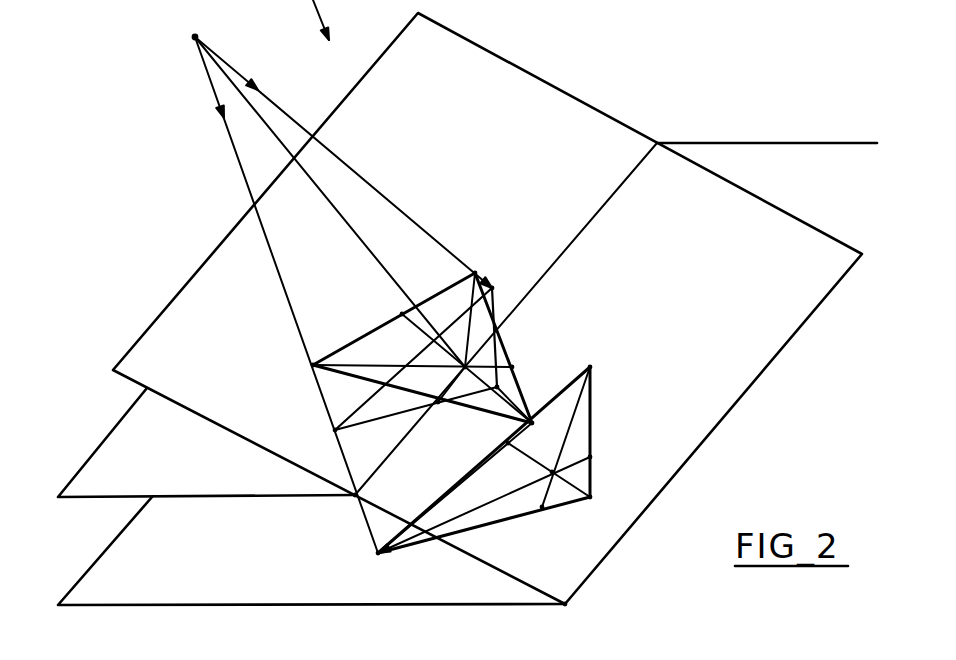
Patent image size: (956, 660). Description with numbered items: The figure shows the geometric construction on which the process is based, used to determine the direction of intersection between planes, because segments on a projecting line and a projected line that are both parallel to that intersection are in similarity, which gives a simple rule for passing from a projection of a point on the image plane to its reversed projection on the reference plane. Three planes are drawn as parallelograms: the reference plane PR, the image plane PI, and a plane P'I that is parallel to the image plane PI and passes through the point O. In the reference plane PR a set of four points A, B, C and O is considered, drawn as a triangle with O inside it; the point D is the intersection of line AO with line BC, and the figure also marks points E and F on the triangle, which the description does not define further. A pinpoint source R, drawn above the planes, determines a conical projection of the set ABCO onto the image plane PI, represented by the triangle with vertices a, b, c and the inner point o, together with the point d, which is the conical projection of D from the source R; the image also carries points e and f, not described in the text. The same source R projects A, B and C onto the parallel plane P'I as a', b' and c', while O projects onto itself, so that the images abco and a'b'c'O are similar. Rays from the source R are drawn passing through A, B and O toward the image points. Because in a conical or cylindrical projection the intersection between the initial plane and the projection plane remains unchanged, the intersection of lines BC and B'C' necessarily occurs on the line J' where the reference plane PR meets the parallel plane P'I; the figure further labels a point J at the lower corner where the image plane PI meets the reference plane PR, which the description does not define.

The reference plane PR is at (113, 368).
The plane parallel to the image plane P'I is at (196, 442).
The image plane PI is at (58, 603).
The pinpoint source R is at (338, 280).
The point A is at (298, 366).
The point B is at (476, 259).
The point C is at (543, 426).
The intersection of line AO with line BC D is at (522, 358).
The point E on side CA E is at (449, 417).
The point F on side AB F is at (390, 304).
The point O is at (461, 370).
The conical projection of A on plane P'I a' is at (321, 432).
The conical projection of B on plane P'I b' is at (505, 278).
The conical projection of C on plane P'I c' is at (507, 389).
The conical projection of A on the image plane a is at (378, 567).
The conical projection of B on the image plane b is at (599, 361).
The conical projection of C on the image plane c is at (599, 499).
The conical projection of D on the image plane d is at (601, 448).
The point e on side ac e is at (544, 518).
The point f on side ab f is at (503, 458).
The conical projection of O on the image plane o is at (558, 486).
The intersection of the reference plane and plane P'I J' is at (341, 511).
The point J at plane corner J is at (568, 618).